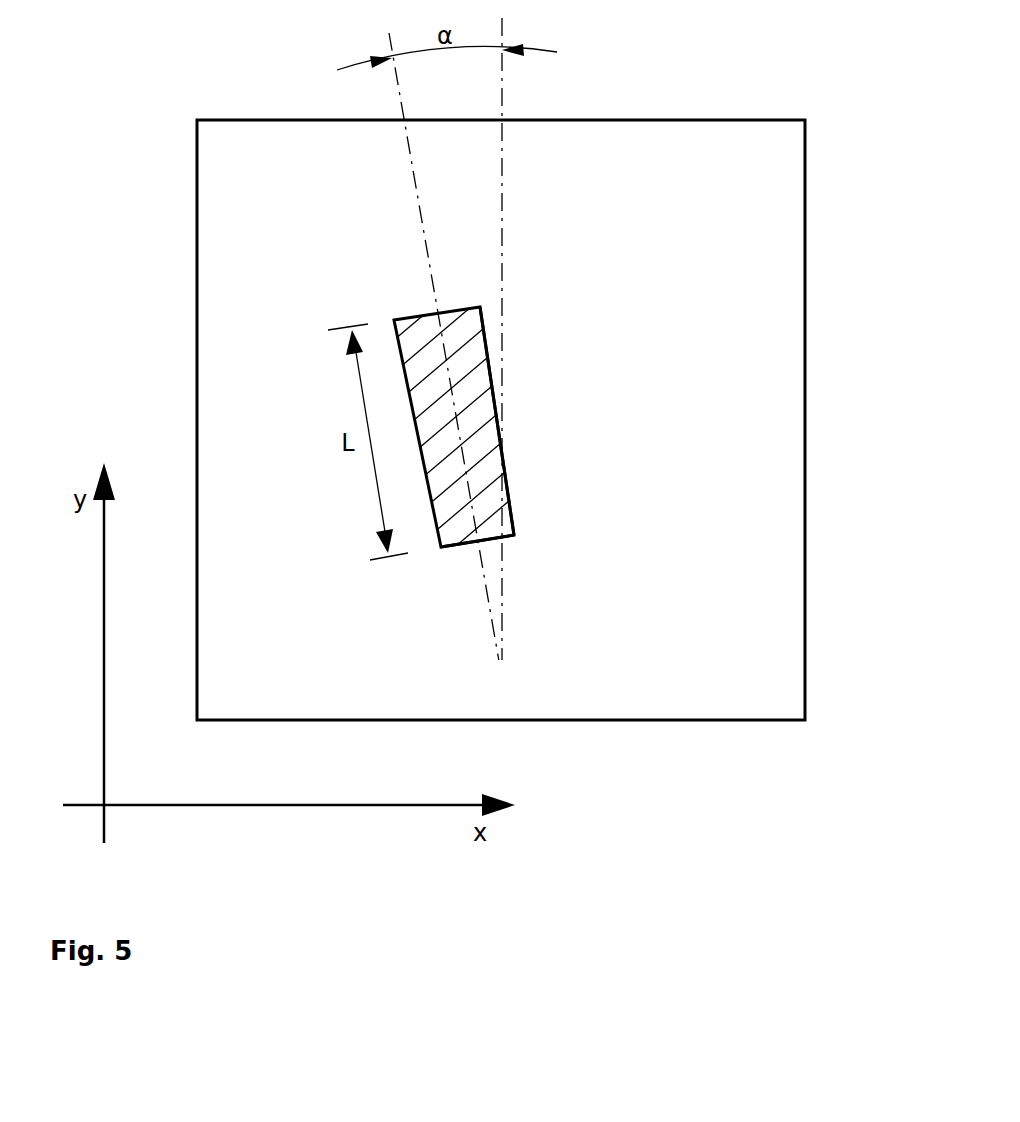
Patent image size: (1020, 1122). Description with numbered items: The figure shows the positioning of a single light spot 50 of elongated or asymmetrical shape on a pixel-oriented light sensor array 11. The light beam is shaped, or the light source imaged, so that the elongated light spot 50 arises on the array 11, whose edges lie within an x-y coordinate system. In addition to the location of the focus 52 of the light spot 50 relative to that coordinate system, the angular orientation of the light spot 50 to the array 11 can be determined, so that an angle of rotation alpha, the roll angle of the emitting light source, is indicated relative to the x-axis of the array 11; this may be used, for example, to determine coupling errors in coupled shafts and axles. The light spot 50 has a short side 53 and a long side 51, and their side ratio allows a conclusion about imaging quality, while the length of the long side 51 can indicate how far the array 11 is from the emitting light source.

The array 11 is at (807, 312).
The light spot 50 is at (413, 317).
The long side 51 is at (487, 346).
The focus 52 is at (483, 410).
The short side 53 is at (457, 547).